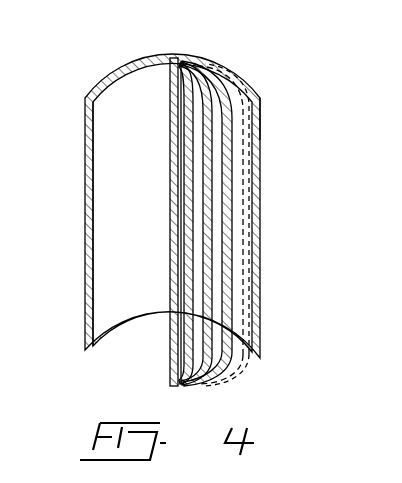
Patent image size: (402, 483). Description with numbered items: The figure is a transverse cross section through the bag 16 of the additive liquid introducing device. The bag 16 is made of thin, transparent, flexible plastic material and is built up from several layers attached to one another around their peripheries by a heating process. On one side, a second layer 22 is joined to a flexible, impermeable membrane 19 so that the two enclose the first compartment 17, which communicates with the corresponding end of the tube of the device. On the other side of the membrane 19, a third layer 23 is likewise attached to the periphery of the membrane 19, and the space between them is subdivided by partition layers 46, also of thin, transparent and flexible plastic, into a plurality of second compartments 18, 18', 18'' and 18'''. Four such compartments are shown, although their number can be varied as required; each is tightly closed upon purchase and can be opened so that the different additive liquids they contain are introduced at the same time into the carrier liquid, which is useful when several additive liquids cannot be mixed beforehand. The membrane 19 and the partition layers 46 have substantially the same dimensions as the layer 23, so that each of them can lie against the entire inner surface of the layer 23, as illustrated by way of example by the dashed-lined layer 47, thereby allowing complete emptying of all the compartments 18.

The bag 16 is at (177, 195).
The first compartment 17 is at (113, 174).
The second compartment 18 is at (159, 222).
The second compartment 18' is at (162, 223).
The second compartment 18'' is at (172, 223).
The second compartment 18''' is at (178, 223).
The flexible impermeable membrane 19 is at (173, 203).
The second layer 22 is at (90, 245).
The third layer 23 is at (263, 97).
The partition layers 46 is at (178, 223).
The dashed-lined layer 47 is at (248, 222).